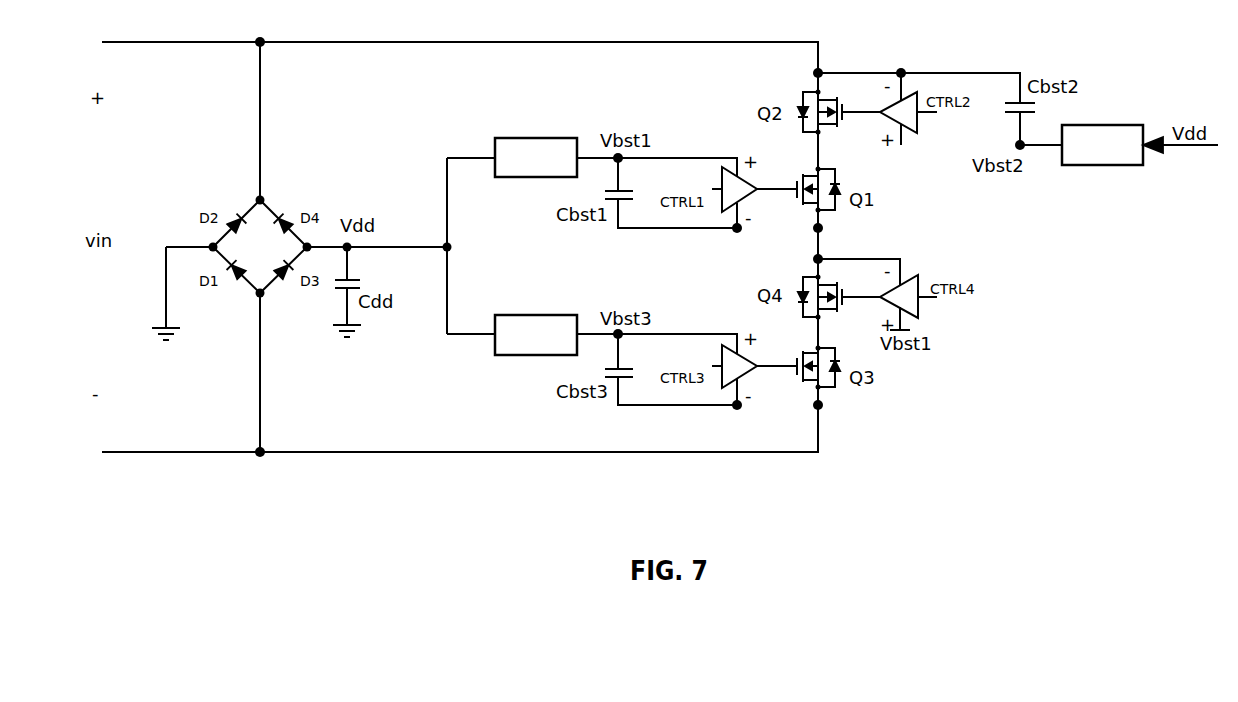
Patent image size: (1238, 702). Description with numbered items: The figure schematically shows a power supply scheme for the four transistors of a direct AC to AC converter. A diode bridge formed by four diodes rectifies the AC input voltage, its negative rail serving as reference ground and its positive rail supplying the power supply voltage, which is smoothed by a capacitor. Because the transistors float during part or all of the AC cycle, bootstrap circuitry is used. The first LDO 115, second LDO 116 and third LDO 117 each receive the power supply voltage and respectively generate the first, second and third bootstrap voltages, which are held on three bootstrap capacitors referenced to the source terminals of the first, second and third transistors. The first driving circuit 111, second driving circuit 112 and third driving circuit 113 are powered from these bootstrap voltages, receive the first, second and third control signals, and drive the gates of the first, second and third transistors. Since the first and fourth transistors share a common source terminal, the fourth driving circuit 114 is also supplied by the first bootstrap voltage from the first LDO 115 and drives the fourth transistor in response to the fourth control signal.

The first driving circuit 111 is at (759, 189).
The second driving circuit 112 is at (879, 112).
The third driving circuit 113 is at (759, 366).
The fourth driving circuit 114 is at (880, 296).
The first LDO 115 is at (510, 177).
The second LDO 116 is at (1083, 165).
The third LDO 117 is at (510, 355).